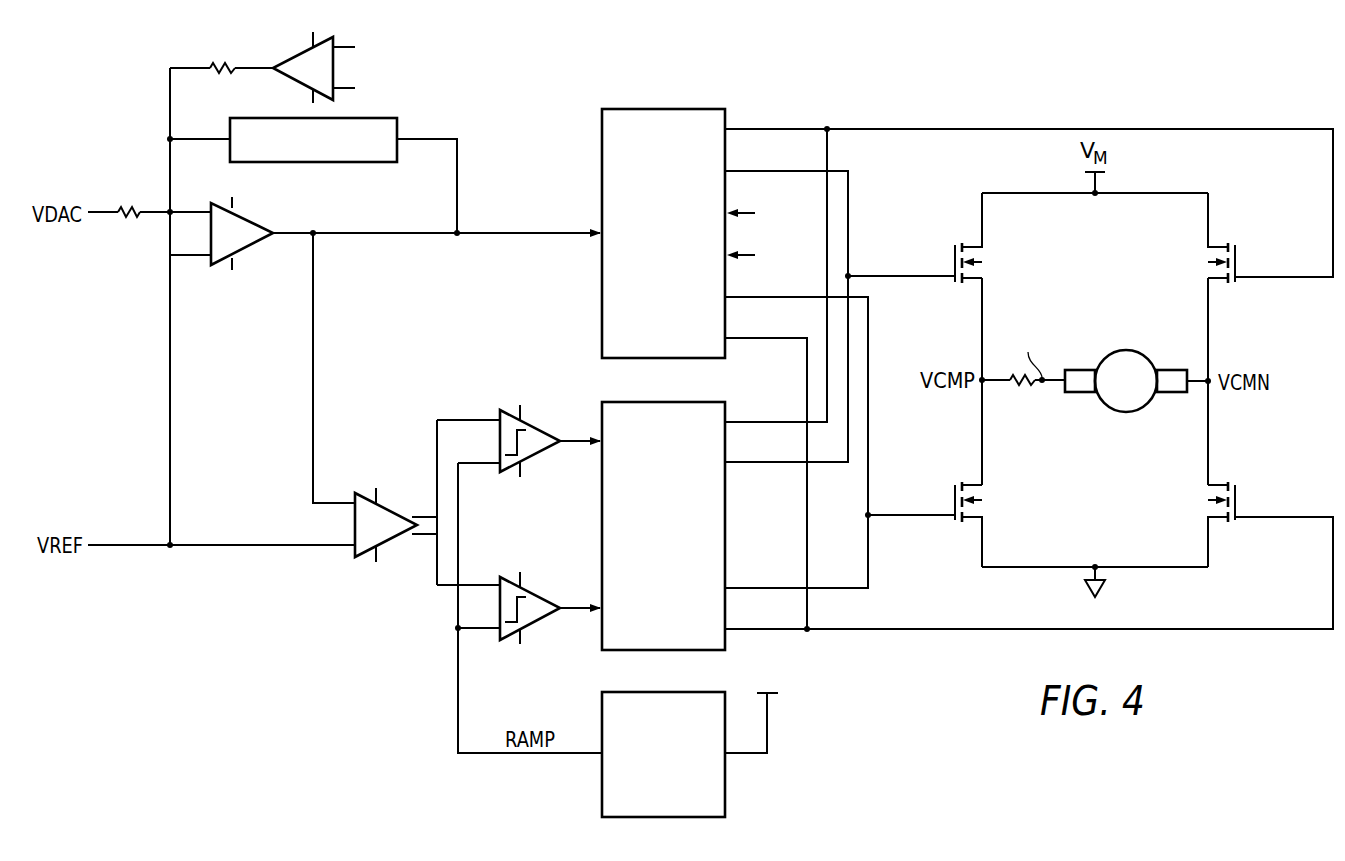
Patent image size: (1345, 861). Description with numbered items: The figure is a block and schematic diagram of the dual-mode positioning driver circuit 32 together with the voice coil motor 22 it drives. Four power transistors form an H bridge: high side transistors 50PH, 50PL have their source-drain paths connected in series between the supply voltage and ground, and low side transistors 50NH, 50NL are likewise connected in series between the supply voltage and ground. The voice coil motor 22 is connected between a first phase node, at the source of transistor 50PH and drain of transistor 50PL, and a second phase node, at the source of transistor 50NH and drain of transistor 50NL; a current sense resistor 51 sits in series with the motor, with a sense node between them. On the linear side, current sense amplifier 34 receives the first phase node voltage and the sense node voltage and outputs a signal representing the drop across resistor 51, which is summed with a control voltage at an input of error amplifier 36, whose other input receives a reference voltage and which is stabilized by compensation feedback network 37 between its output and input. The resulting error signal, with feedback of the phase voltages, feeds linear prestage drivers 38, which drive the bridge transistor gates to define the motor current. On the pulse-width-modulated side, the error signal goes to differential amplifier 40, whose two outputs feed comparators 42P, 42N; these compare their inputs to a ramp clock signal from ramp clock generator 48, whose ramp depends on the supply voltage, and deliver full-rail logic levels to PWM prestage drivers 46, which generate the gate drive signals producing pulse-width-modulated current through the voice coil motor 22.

The positioning driver circuit 32 is at (886, 98).
The current sense amplifier 34 is at (303, 50).
The error amplifier 36 is at (245, 253).
The compensation feedback network 37 is at (325, 163).
The linear prestage drivers 38 is at (600, 205).
The differential amplifier 40 is at (387, 507).
The comparator 42P is at (530, 422).
The comparator 42N is at (530, 628).
The PWM prestage drivers 46 is at (600, 540).
The ramp clock generator 48 is at (600, 780).
The high side transistor 50PH is at (953, 255).
The low side transistor 50NH is at (1240, 258).
The high side transistor 50PL is at (953, 497).
The low side transistor 50NL is at (1240, 495).
The current sense resistor 51 is at (1042, 384).
The voice coil motor 22 is at (1126, 350).